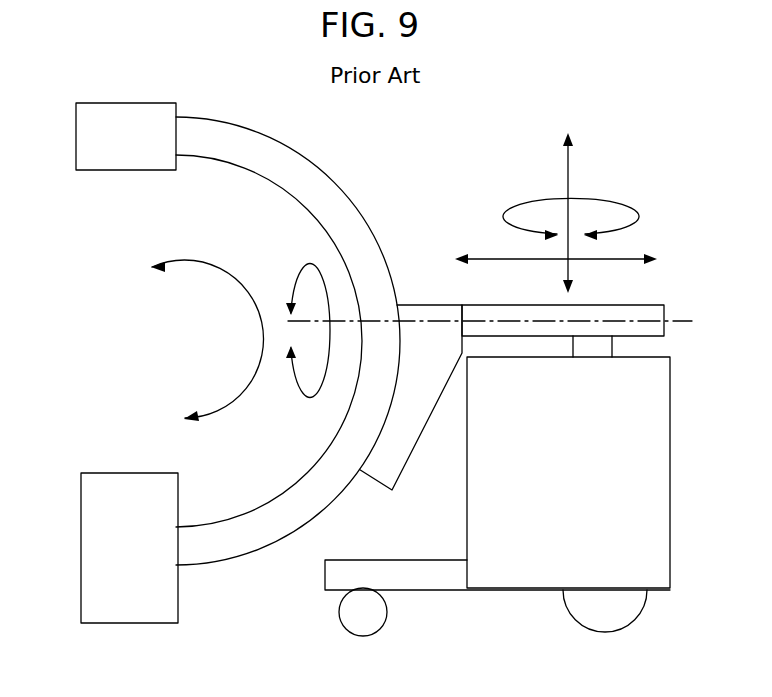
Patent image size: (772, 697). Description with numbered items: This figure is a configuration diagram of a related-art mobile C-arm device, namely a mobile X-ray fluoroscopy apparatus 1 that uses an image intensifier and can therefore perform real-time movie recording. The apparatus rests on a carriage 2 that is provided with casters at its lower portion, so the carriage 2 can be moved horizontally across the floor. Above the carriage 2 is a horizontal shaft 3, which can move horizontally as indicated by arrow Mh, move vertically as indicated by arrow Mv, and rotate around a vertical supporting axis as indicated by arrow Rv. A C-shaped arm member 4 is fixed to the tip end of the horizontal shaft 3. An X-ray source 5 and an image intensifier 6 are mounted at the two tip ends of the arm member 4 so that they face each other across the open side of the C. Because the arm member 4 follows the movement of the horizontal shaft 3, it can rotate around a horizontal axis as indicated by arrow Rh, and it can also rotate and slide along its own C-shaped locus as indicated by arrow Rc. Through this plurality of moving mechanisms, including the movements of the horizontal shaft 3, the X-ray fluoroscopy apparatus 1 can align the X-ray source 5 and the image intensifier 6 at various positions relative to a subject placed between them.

The X-ray fluoroscopy apparatus 1 is at (456, 110).
The carriage 2 is at (658, 455).
The horizontal shaft 3 is at (645, 313).
The arm member 4 is at (277, 152).
The X-ray source 5 is at (97, 128).
The image intensifier 6 is at (95, 558).
The arrow Rc is at (203, 265).
The arrow Rh is at (297, 278).
The arrow Mv is at (568, 172).
The arrow Mh is at (477, 259).
The arrow Rv is at (620, 203).